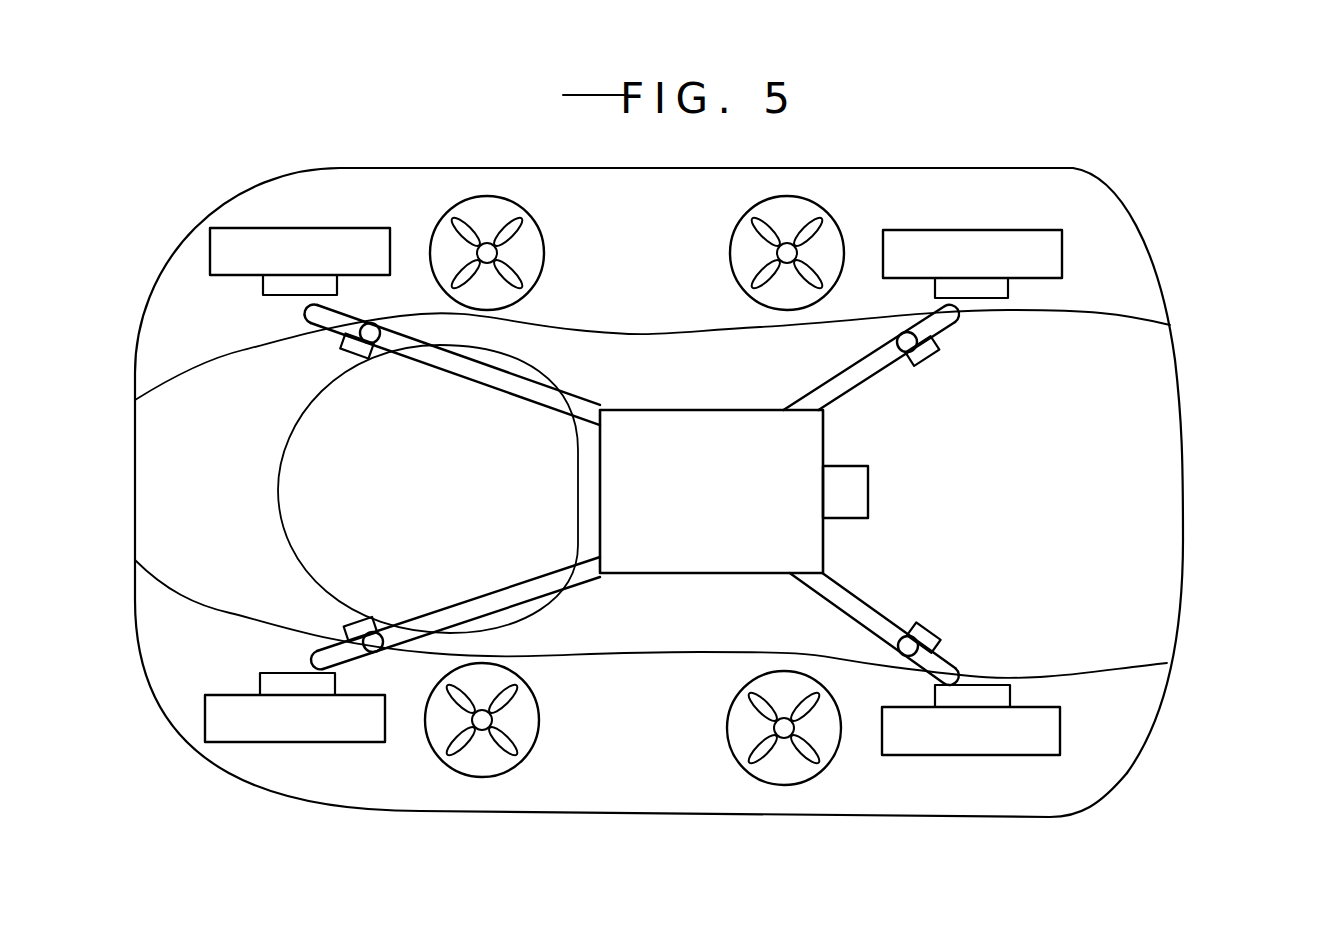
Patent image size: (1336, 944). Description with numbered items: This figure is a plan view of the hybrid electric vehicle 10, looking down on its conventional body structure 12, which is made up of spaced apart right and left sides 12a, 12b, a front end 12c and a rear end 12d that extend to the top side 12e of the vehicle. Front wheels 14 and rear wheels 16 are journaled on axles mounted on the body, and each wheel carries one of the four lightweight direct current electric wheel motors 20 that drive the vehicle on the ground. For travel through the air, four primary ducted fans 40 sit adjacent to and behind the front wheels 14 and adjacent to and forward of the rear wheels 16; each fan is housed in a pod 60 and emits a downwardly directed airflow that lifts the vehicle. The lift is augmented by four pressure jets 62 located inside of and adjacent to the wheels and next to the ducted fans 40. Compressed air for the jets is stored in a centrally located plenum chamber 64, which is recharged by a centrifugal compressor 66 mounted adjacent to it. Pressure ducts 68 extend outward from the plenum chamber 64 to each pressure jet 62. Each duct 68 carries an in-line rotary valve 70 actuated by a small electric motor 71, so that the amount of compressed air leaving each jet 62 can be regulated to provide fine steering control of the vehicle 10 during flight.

The vehicle 10 is at (1068, 93).
The body structure 12 is at (956, 160).
The right side 12a is at (717, 166).
The left side 12b is at (657, 813).
The front end 12c is at (134, 530).
The rear end 12d is at (1186, 537).
The top side 12e is at (205, 435).
The front wheels 14 is at (330, 245).
The rear wheels 16 is at (974, 247).
The electric wheel motors 20 is at (272, 283).
The ducted fans 40 is at (515, 252).
The pods 60 is at (462, 196).
The pressure jets 62 is at (310, 312).
The plenum chamber 64 is at (720, 433).
The centrifugal compressor 66 is at (868, 490).
The pressure ducts 68 is at (510, 383).
The in-line rotary valves 70 is at (373, 323).
The electric motors 71 is at (364, 358).